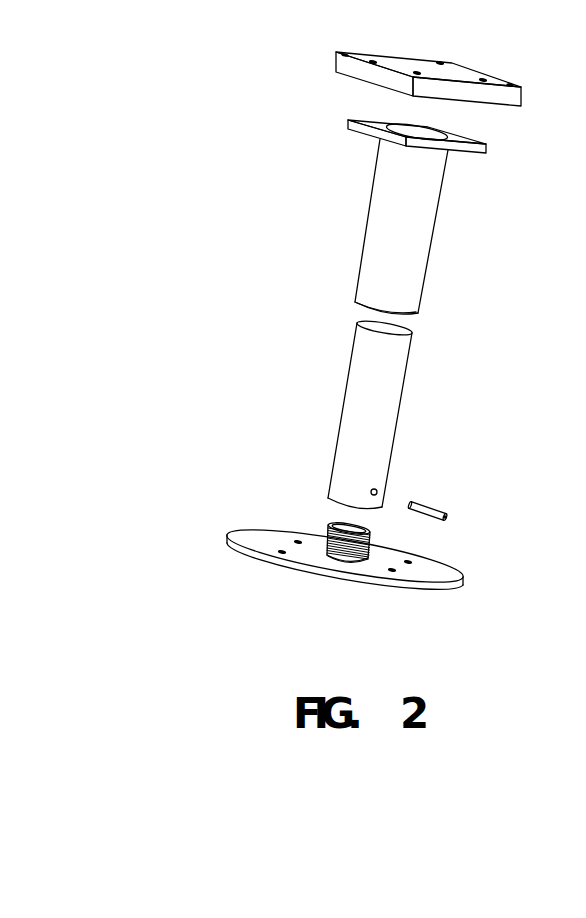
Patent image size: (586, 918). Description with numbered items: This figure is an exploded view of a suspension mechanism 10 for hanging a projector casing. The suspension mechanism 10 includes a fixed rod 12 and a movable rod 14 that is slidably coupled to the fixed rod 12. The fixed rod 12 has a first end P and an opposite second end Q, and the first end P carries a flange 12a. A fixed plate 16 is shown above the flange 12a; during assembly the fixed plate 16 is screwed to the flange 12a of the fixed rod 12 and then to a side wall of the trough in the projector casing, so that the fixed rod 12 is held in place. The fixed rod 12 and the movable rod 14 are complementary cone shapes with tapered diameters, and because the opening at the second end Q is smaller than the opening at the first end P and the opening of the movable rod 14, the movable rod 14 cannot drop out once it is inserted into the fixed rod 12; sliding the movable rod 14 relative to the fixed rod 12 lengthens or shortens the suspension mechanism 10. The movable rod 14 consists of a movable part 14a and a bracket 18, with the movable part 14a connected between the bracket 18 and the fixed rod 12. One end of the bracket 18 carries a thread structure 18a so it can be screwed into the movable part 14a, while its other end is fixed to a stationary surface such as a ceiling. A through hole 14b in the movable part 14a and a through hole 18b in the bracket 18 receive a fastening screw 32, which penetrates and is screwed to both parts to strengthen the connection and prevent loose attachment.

The suspension mechanism 10 is at (153, 38).
The fixed plate 16 is at (334, 72).
The fixed rod 12 is at (375, 233).
The flange 12a is at (391, 145).
The first end P is at (458, 137).
The second end Q is at (408, 315).
The movable rod 14 is at (298, 476).
The movable part 14a is at (317, 413).
The through hole 14b is at (378, 490).
The bracket 18 is at (323, 564).
The thread structure 18a is at (328, 531).
The through hole 18b is at (367, 562).
The fastening screw 32 is at (428, 510).